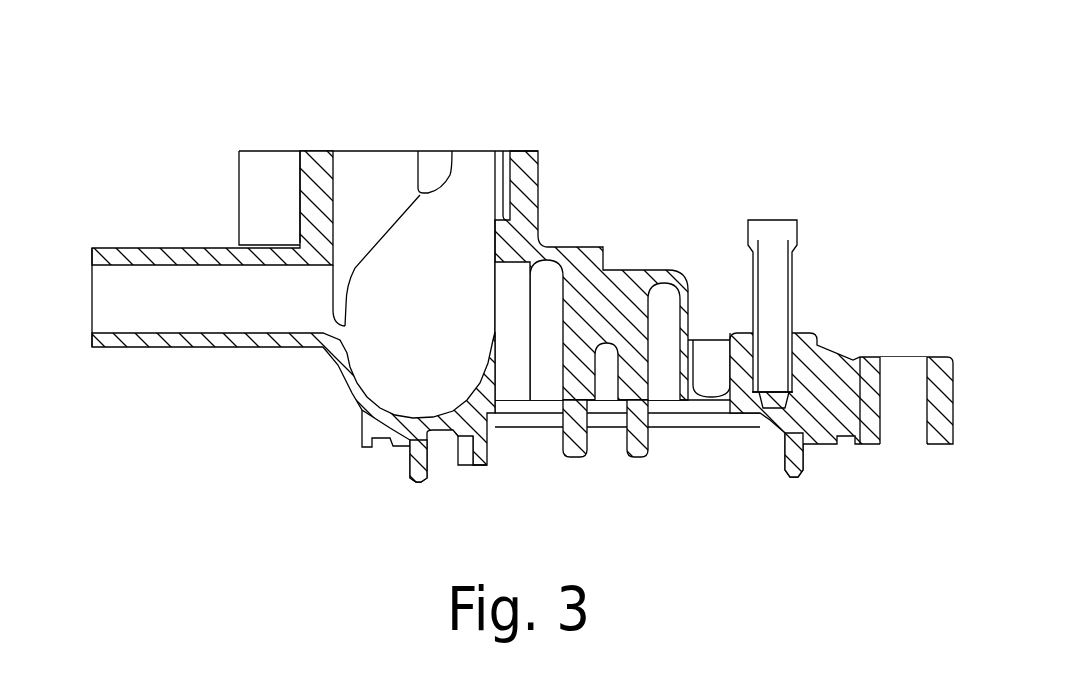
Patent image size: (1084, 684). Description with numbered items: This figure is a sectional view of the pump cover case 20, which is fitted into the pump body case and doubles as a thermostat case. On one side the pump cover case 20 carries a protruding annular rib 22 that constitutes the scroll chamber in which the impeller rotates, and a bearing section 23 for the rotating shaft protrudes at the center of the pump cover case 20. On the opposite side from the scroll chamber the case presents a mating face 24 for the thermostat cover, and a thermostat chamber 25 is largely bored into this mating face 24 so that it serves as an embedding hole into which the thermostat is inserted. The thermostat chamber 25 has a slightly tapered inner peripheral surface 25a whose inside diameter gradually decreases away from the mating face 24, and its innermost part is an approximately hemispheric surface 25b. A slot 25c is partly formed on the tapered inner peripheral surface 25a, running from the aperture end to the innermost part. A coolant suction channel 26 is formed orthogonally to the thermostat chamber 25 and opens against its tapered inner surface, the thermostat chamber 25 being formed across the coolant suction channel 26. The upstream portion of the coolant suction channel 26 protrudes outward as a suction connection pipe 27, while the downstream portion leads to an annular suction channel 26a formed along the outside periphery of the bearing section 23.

The pump cover case 20 is at (526, 92).
The annular rib 22 is at (416, 484).
The bearing section 23 is at (630, 459).
The mating face 24 is at (287, 152).
The thermostat chamber 25 is at (379, 193).
The tapered inner peripheral surface 25a is at (333, 190).
The hemispheric surface 25b is at (482, 402).
The slot 25c is at (489, 165).
The coolant suction channel 26 is at (508, 314).
The annular suction channel 26a is at (654, 298).
The suction connection pipe 27 is at (140, 347).